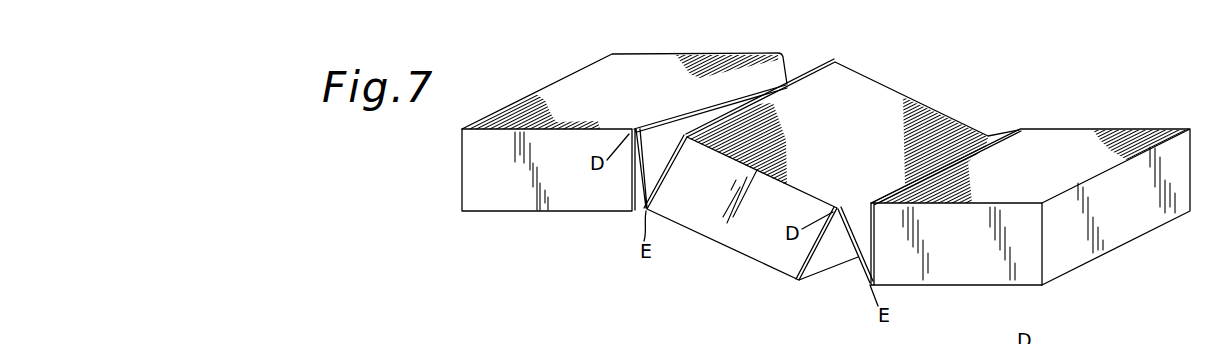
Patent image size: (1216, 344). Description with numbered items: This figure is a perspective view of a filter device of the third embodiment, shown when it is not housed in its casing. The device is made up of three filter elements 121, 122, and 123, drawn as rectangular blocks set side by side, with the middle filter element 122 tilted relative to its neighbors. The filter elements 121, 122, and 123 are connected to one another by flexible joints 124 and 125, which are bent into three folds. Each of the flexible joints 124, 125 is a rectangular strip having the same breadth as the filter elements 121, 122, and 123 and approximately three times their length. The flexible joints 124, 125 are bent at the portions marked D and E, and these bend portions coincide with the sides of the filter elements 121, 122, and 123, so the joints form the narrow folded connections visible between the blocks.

The filter element 121 is at (518, 199).
The filter element 122 is at (713, 228).
The filter element 123 is at (952, 274).
The flexible joint 124 is at (638, 190).
The flexible joint 125 is at (852, 256).